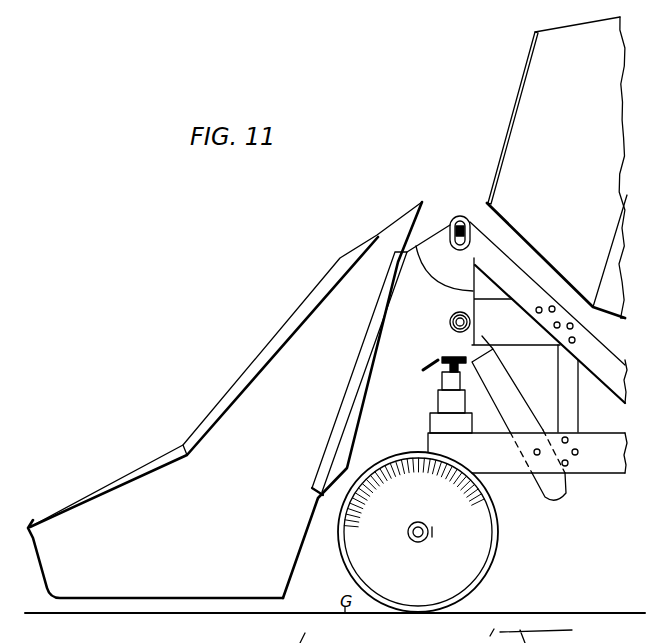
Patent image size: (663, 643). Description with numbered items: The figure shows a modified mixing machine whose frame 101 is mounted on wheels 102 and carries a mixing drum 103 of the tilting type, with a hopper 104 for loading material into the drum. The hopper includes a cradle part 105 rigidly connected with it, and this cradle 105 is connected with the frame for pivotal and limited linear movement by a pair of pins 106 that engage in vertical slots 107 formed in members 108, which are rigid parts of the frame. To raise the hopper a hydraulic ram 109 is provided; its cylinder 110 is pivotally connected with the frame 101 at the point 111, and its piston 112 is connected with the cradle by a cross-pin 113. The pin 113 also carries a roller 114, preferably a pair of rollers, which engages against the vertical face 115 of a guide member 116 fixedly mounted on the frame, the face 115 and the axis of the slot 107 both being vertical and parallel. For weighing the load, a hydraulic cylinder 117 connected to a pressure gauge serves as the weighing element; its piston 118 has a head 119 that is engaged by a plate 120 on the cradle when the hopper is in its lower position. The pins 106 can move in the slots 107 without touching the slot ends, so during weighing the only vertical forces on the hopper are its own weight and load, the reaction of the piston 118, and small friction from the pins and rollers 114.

The frame 101 is at (593, 463).
The wheels 102 is at (448, 567).
The mixing drum 103 is at (547, 67).
The hopper 104 is at (262, 557).
The cradle part 105 is at (352, 431).
The pins 106 is at (450, 220).
The vertical slots 107 is at (457, 243).
The members 108 is at (483, 258).
The hydraulic ram 109 is at (507, 371).
The cylinder 110 is at (498, 395).
The point 111 is at (540, 452).
The piston 112 is at (442, 393).
The cross-pin 113 is at (450, 325).
The roller 114 is at (451, 320).
The vertical face 115 is at (478, 311).
The guide member 116 is at (540, 329).
The hydraulic cylinder 117 is at (460, 388).
The piston 118 is at (445, 376).
The head 119 is at (440, 364).
The plate 120 is at (438, 360).